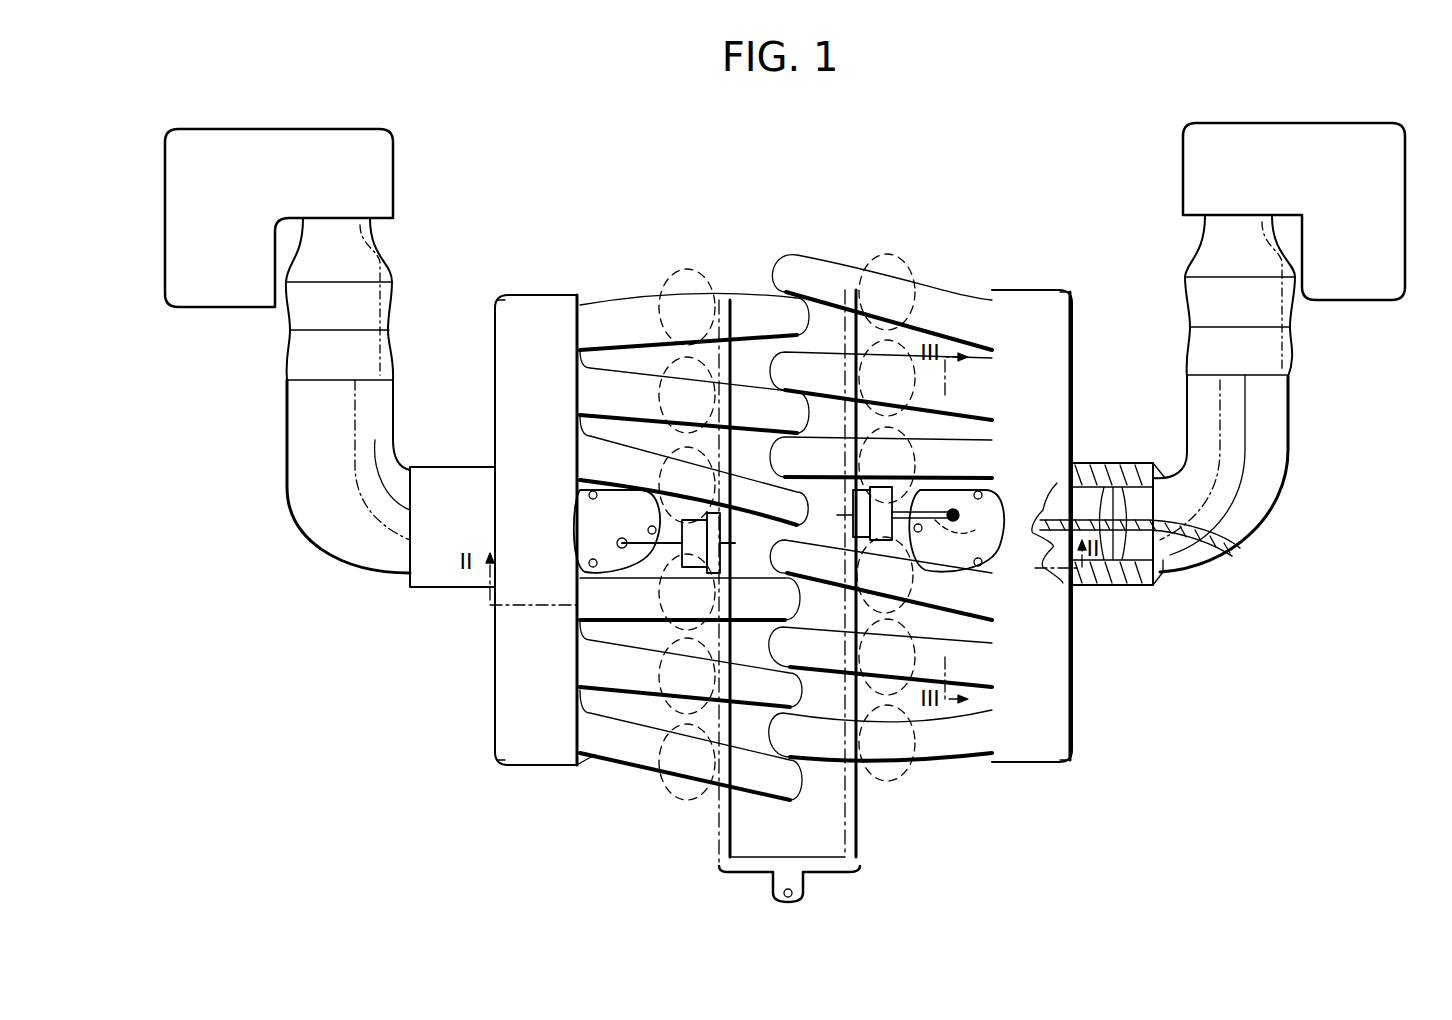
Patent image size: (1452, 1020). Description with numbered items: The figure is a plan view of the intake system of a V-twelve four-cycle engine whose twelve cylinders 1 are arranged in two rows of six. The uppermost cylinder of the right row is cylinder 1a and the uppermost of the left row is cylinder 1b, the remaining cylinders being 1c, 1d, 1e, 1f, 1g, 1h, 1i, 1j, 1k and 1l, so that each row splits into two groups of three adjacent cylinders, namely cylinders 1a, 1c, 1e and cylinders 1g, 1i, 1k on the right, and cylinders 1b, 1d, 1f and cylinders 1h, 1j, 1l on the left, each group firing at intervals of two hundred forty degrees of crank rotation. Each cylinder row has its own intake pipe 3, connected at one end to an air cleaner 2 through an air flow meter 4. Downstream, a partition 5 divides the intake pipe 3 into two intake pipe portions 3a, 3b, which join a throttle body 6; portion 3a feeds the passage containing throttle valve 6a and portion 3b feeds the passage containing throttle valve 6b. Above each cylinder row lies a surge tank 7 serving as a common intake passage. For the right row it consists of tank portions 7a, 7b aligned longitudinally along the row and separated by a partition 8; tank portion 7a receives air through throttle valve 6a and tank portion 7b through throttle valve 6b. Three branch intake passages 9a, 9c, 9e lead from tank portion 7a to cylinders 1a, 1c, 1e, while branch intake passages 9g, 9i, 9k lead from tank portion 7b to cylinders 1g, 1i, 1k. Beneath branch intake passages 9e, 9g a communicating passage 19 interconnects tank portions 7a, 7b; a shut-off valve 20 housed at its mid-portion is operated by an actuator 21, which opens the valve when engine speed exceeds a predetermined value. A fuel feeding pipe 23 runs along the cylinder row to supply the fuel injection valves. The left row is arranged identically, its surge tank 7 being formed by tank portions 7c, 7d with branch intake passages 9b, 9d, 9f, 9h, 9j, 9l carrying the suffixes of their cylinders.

The cylinders 1 is at (672, 264).
The cylinder 1a is at (868, 262).
The cylinder 1b is at (696, 270).
The cylinder 1c is at (856, 345).
The cylinder 1d is at (662, 372).
The cylinder 1e is at (856, 425).
The cylinder 1f is at (660, 450).
The cylinder 1g is at (857, 605).
The cylinder 1h is at (716, 628).
The cylinder 1i is at (858, 688).
The cylinder 1j is at (712, 708).
The cylinder 1k is at (885, 785).
The cylinder 1l is at (672, 798).
The air cleaner 2 is at (376, 140).
The intake pipe 3 is at (305, 405).
The intake pipe portion 3a is at (1170, 492).
The intake pipe portion 3b is at (1180, 588).
The air flow meter 4 is at (300, 316).
The partition 5 is at (1200, 556).
The throttle body 6 is at (432, 565).
The throttle valve 6a is at (1100, 478).
The throttle valve 6b is at (1120, 585).
The surge tank 7 is at (510, 292).
The tank portion 7a is at (1072, 300).
The tank portion 7b is at (1060, 752).
The tank portion 7c is at (510, 323).
The tank portion 7d is at (540, 756).
The partition 8 is at (1060, 495).
The branch intake passage 9a is at (982, 318).
The branch intake passage 9b is at (593, 322).
The branch intake passage 9c is at (973, 393).
The branch intake passage 9d is at (595, 390).
The branch intake passage 9e is at (980, 458).
The branch intake passage 9f is at (595, 455).
The branch intake passage 9g is at (988, 600).
The branch intake passage 9h is at (595, 612).
The branch intake passage 9i is at (982, 672).
The branch intake passage 9j is at (593, 668).
The branch intake passage 9k is at (965, 740).
The branch intake passage 9l is at (593, 730).
The communicating passage 19 is at (990, 535).
The shut-off valve 20 is at (1000, 515).
The actuator 21 is at (848, 498).
The fuel feeding pipe 23 is at (758, 345).